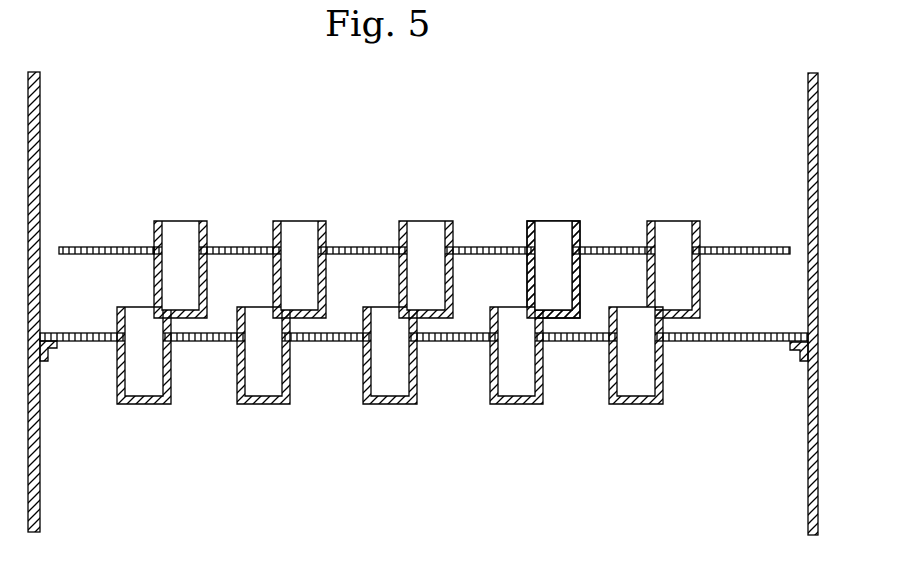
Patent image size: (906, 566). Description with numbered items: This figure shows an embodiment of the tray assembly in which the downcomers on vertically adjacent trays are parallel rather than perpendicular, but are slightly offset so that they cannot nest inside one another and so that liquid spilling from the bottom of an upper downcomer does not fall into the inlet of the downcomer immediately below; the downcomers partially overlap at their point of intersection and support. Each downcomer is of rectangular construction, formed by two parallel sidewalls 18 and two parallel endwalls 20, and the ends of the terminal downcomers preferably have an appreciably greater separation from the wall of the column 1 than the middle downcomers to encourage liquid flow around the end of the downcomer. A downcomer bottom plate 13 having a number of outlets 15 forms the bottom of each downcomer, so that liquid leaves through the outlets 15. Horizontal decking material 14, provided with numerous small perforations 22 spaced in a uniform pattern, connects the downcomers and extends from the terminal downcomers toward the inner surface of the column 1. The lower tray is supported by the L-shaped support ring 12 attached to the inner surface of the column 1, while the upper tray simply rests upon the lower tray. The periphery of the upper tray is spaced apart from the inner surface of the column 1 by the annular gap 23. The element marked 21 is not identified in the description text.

The column 1 is at (818, 390).
The L-shaped support ring 12 is at (795, 352).
The downcomer bottom plate 13 is at (171, 405).
The horizontal decking material 14 is at (119, 247).
The outlets 15 is at (380, 406).
The sidewalls 18 is at (646, 284).
The endwalls 20 is at (443, 280).
The end cup 21 is at (637, 405).
The perforations 22 is at (96, 247).
The annular gap 23 is at (801, 240).